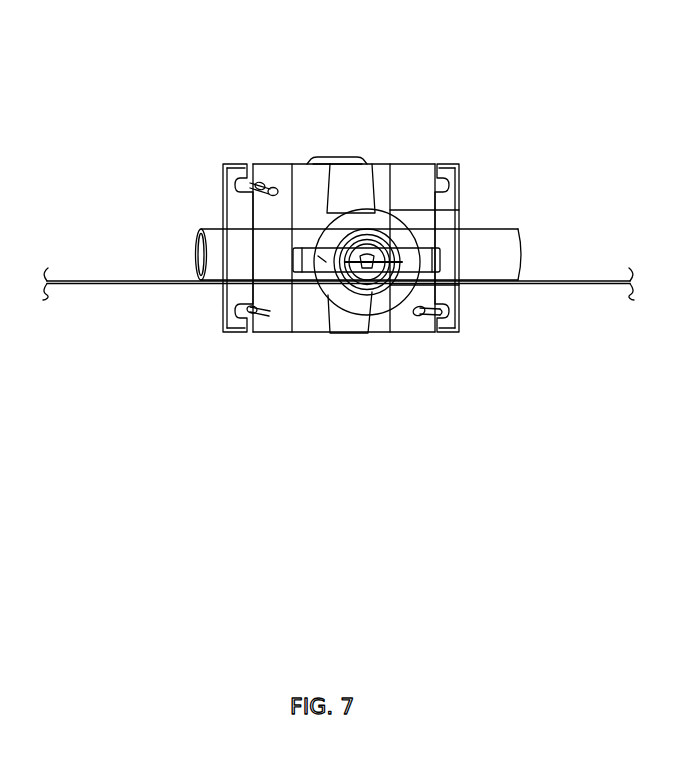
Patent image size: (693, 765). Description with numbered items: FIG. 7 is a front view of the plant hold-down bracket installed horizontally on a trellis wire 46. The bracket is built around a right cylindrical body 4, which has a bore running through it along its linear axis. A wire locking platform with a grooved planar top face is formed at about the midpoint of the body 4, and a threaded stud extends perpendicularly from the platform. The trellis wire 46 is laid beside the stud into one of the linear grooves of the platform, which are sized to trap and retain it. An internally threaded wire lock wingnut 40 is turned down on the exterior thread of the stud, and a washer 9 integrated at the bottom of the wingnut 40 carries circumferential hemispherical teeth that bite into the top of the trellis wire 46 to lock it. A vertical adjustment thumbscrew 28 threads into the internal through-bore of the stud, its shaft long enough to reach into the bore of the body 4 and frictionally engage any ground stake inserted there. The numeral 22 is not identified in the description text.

The right cylindrical body 4 is at (500, 245).
The washer 9 is at (370, 212).
The fastener screw 22 is at (432, 320).
The vertical adjustment thumbscrew 28 is at (267, 192).
The wire lock wingnut 40 is at (266, 183).
The trellis wire 46 is at (72, 284).